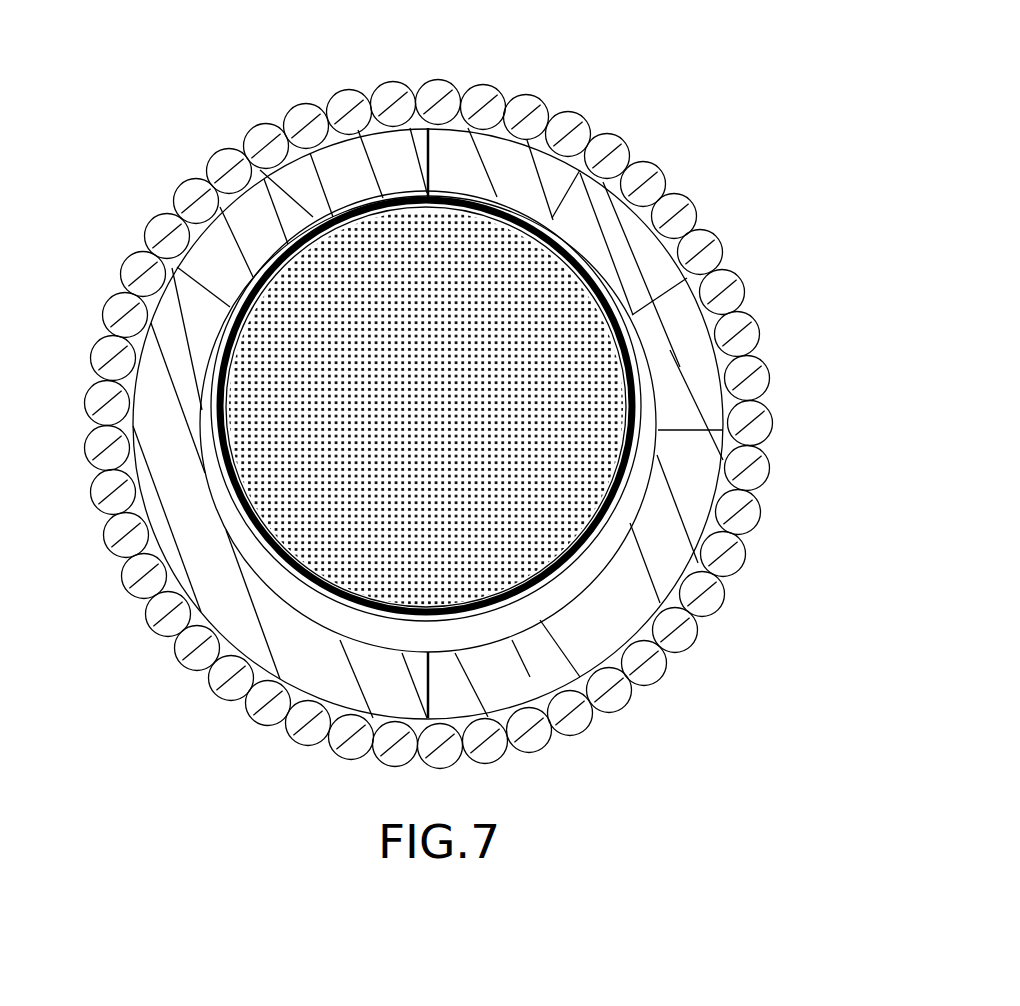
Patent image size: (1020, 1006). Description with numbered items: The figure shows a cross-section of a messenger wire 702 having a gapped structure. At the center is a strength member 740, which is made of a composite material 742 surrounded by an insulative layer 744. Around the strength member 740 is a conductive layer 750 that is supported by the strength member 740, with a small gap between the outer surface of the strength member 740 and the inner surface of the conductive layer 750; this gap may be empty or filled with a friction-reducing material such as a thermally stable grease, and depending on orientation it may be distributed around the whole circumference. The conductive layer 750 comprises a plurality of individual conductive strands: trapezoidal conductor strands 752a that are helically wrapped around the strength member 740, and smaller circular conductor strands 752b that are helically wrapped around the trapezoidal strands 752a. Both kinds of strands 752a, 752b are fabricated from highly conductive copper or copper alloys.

The messenger wire 702 is at (461, 389).
The strength member 740 is at (461, 451).
The composite material 742 is at (522, 407).
The insulative layer 744 is at (483, 429).
The conductive layer 750 is at (461, 424).
The trapezoidal conductor strands 752a is at (703, 452).
The circular conductor strands 752b is at (748, 345).